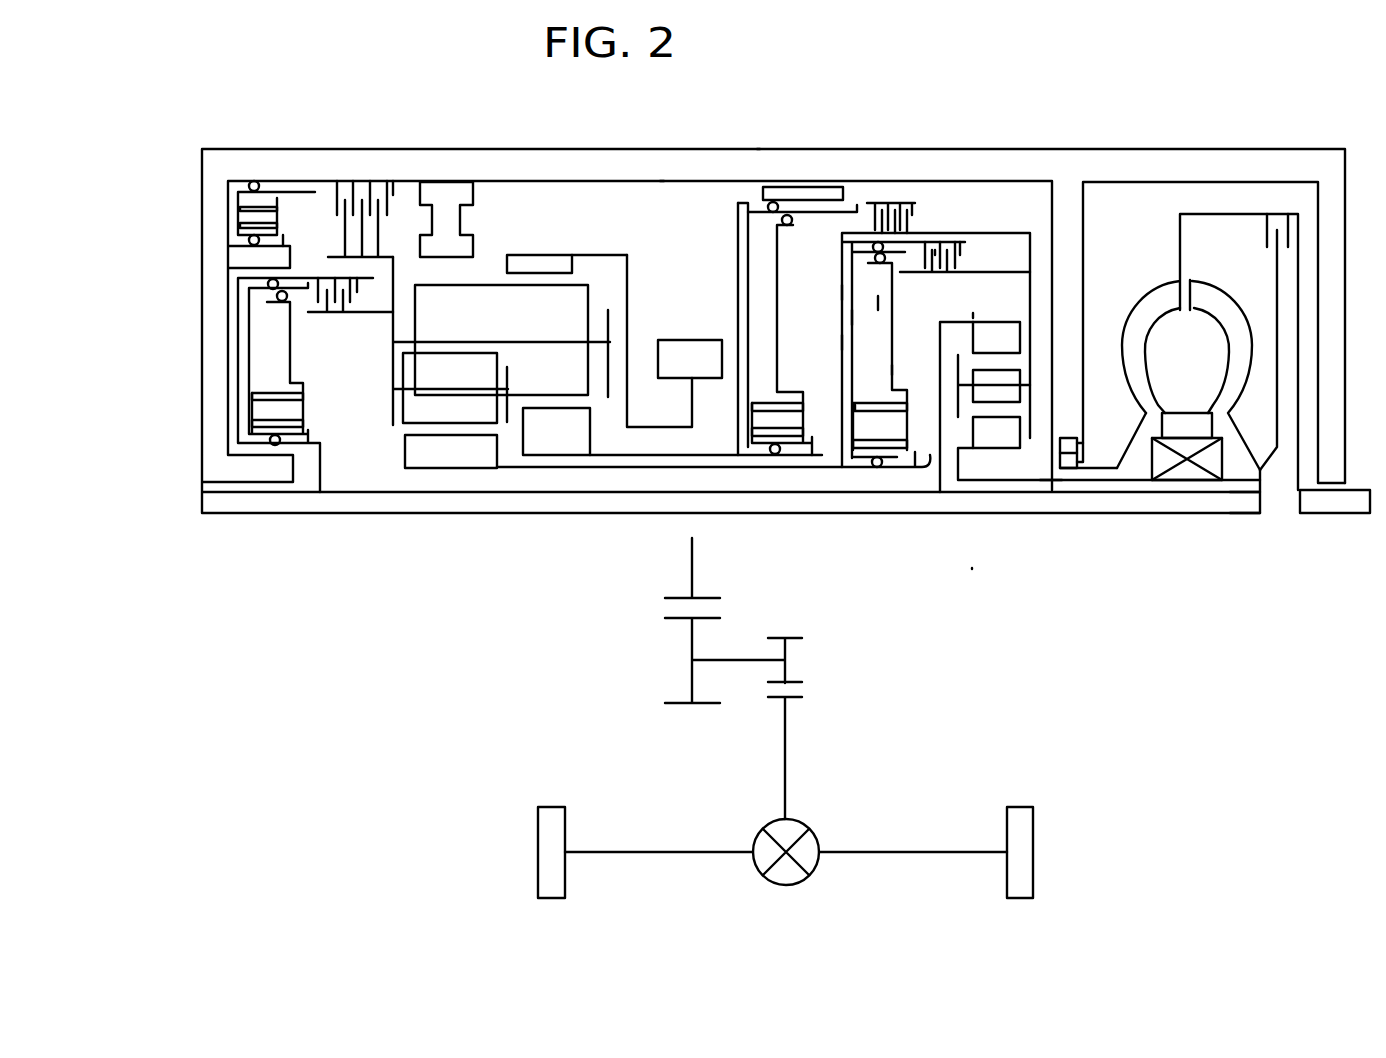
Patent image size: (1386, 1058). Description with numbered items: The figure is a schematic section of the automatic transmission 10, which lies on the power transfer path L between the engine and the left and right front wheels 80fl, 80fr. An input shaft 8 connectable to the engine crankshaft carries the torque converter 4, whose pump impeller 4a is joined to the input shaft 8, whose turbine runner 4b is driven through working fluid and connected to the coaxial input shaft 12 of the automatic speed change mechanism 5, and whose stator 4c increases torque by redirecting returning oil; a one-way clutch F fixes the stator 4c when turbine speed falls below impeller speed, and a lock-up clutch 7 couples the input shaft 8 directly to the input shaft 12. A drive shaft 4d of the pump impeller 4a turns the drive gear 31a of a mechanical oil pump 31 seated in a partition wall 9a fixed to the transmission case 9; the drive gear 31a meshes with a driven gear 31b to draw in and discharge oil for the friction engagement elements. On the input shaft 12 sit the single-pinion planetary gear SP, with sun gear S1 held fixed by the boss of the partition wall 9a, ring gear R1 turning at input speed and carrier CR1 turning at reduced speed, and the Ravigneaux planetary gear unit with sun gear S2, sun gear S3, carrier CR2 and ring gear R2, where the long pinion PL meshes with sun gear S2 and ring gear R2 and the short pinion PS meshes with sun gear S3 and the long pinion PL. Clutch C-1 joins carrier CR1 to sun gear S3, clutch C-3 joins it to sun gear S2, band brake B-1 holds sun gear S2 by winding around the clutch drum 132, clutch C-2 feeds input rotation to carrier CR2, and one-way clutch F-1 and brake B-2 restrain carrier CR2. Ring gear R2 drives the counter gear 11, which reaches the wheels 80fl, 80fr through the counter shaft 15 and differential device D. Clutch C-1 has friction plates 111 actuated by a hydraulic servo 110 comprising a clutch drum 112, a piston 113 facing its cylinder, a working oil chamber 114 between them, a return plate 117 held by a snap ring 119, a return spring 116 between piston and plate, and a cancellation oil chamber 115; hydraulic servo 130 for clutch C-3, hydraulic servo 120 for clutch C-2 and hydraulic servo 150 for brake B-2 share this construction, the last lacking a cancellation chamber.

The automatic transmission 10 is at (773, 118).
The transmission case 9 is at (1017, 149).
The partition wall 9a is at (1084, 209).
The automatic speed change mechanism 5 is at (662, 200).
The torque converter 4 is at (1202, 203).
The pump impeller 4a is at (1147, 305).
The turbine runner 4b is at (1225, 307).
The stator 4c is at (1187, 413).
The drive shaft 4d is at (1130, 442).
The lock-up clutch 7 is at (1284, 202).
The input shaft 8 is at (1322, 515).
The input shaft 12 is at (1245, 515).
The hydraulic servo 150 is at (222, 212).
The hydraulic servo 120 is at (232, 360).
The clutch drum 132 is at (745, 197).
The hydraulic servo 130 is at (727, 273).
The hydraulic servo 110 is at (834, 273).
The friction plates 111 is at (937, 252).
The clutch drum 112 is at (843, 293).
The piston 113 is at (853, 320).
The working oil chamber 114 is at (847, 343).
The cancellation oil chamber 115 is at (883, 303).
The return spring 116 is at (868, 402).
The return plate 117 is at (927, 350).
The snap ring 119 is at (931, 477).
The counter gear 11 is at (690, 340).
The mechanical oil pump 31 is at (1066, 427).
The drive gear 31a is at (1050, 481).
The driven gear 31b is at (1095, 470).
The counter shaft 15 is at (757, 660).
The differential device D is at (802, 823).
The power transfer path L is at (978, 573).
The one-way clutch F is at (1188, 482).
The left front wheel 80fl is at (538, 830).
The right front wheel 80fr is at (1033, 830).
The sun gear S1 is at (998, 450).
The sun gear S2 is at (590, 440).
The sun gear S3 is at (405, 450).
The ring gear R1 is at (997, 322).
The ring gear R2 is at (545, 255).
The short pinion PS is at (497, 360).
The long pinion PL is at (590, 307).
The carrier CR1 is at (1042, 368).
The carrier CR2 is at (378, 378).
The planetary gear SP is at (971, 306).
The brake B-1 is at (803, 178).
The brake B-2 is at (360, 206).
The clutch C-1 is at (965, 257).
The clutch C-2 is at (350, 281).
The clutch C-3 is at (891, 205).
The one-way clutch F-1 is at (465, 219).